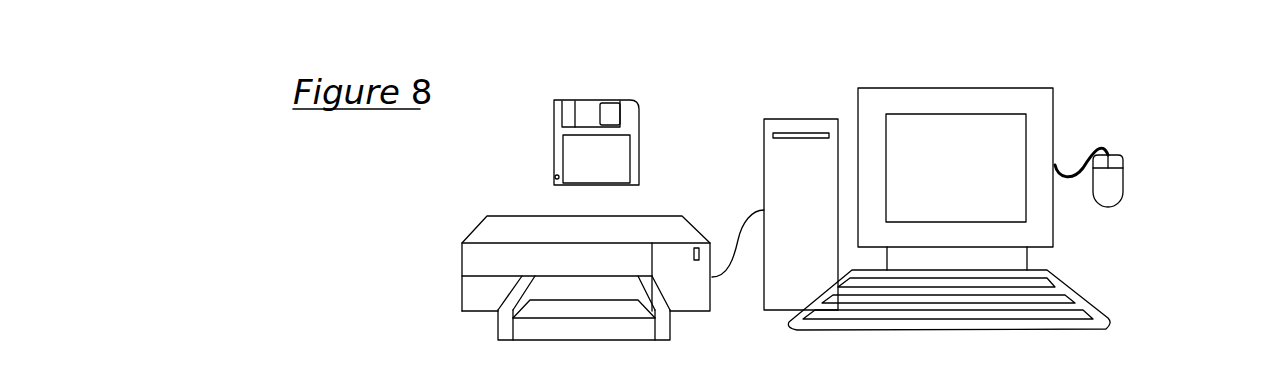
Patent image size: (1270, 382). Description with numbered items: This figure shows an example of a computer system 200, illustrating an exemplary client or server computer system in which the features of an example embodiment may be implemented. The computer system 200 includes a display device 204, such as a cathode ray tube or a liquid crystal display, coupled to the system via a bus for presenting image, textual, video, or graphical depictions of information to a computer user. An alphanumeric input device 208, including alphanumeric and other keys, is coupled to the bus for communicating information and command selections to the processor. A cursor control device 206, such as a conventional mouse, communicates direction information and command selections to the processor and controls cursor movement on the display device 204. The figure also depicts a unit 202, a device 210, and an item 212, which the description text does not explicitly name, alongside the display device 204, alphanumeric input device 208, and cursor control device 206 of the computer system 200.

The computer system 200 is at (1062, 73).
The processing unit / tower 202 is at (769, 191).
The display device 204 is at (1013, 179).
The cursor control device 206 is at (1157, 188).
The alphanumeric input device 208 is at (1003, 300).
The printer 210 is at (531, 273).
The floppy disk / removable storage medium 212 is at (553, 142).